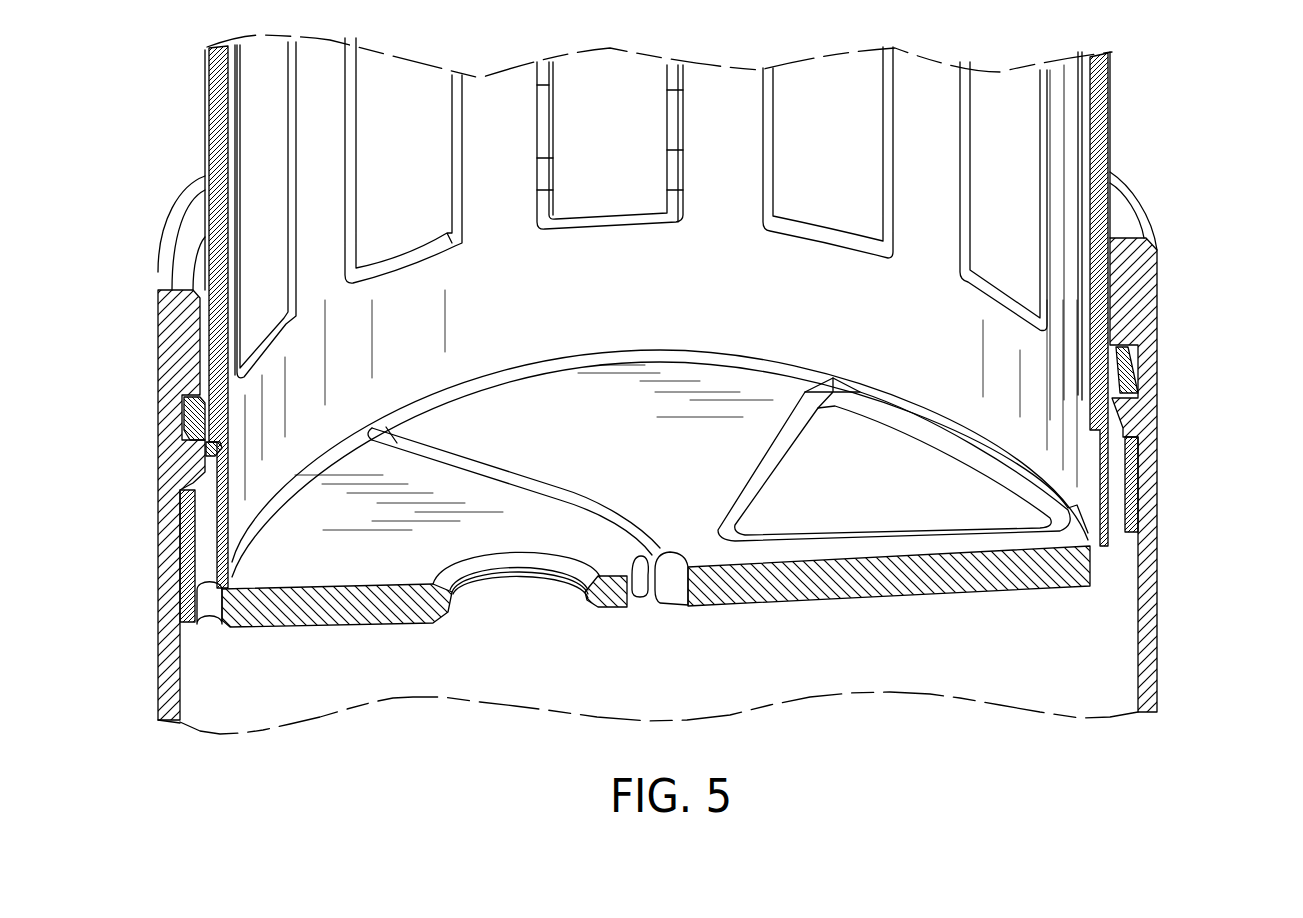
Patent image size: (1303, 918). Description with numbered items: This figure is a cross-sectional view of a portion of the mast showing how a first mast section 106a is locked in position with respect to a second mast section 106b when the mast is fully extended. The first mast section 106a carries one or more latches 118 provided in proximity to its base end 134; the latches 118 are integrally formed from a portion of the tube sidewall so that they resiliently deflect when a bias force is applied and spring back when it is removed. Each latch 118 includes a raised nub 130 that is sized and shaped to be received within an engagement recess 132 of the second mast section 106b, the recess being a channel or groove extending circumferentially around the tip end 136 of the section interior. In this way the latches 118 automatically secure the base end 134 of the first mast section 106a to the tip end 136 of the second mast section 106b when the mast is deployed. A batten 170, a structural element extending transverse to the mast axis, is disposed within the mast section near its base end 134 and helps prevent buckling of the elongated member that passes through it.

The first mast section 106a is at (1146, 109).
The second mast section 106b is at (1189, 629).
The latch 118 is at (421, 166).
The raised nub 130 is at (207, 424).
The engagement recess 132 is at (190, 428).
The base end 134 is at (1130, 488).
The tip end 136 is at (1145, 258).
The batten 170 is at (345, 605).